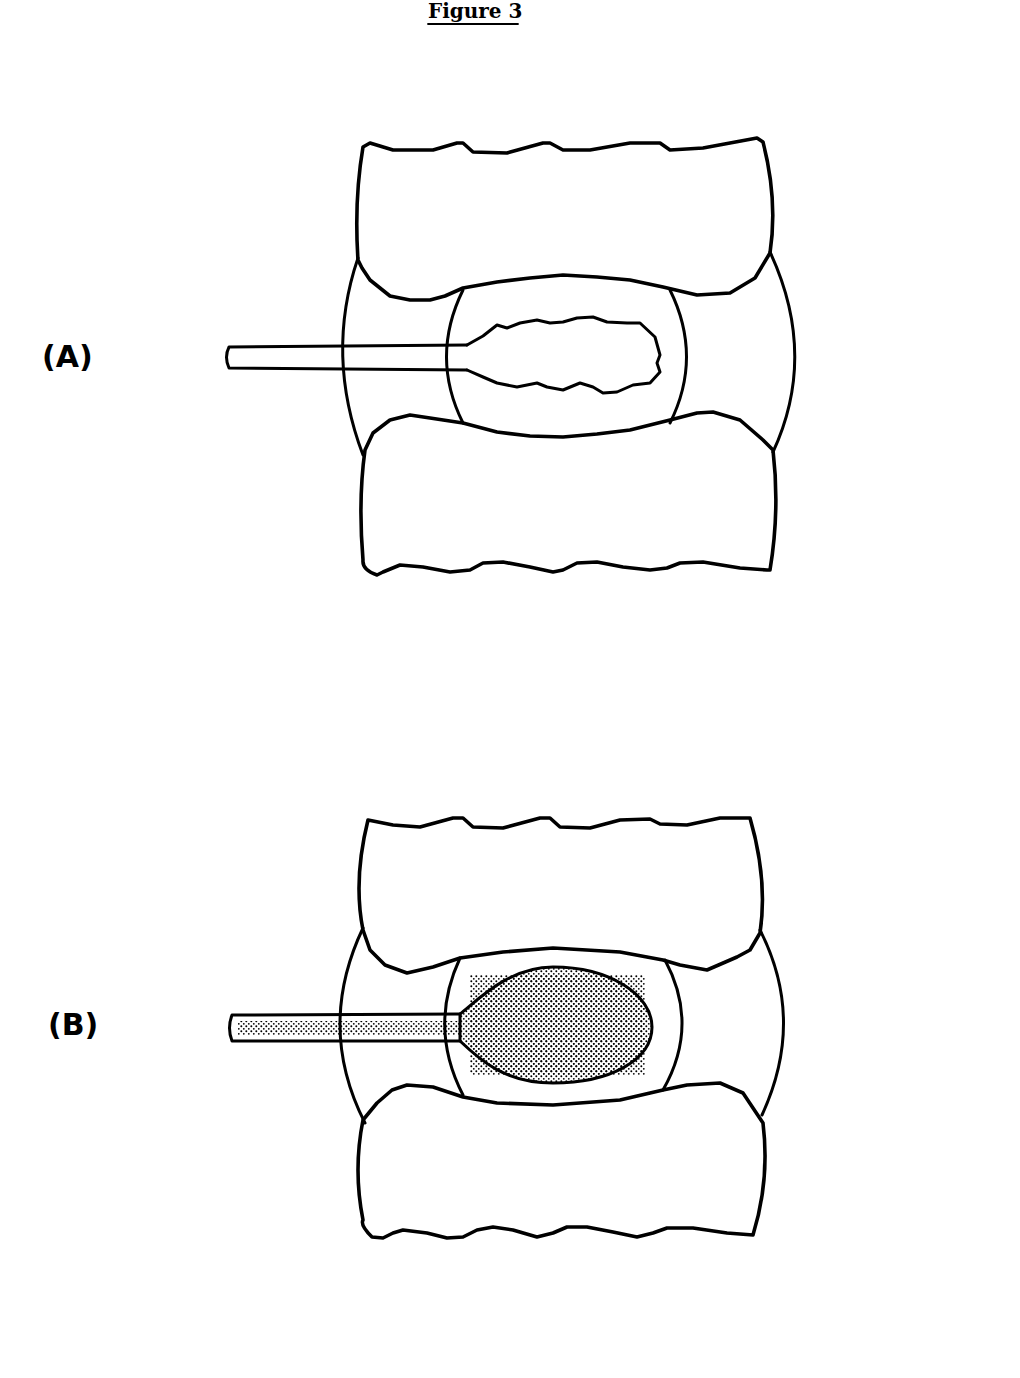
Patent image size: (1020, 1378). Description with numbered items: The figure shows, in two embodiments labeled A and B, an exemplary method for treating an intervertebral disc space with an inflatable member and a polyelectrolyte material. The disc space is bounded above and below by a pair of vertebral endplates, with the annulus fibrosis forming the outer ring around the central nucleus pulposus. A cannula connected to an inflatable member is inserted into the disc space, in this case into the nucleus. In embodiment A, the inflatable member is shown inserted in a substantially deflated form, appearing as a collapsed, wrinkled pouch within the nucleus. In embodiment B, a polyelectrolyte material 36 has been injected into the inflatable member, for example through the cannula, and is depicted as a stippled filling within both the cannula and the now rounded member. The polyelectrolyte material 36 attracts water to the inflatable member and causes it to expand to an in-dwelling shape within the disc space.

The polyelectrolyte material 36 is at (560, 1037).